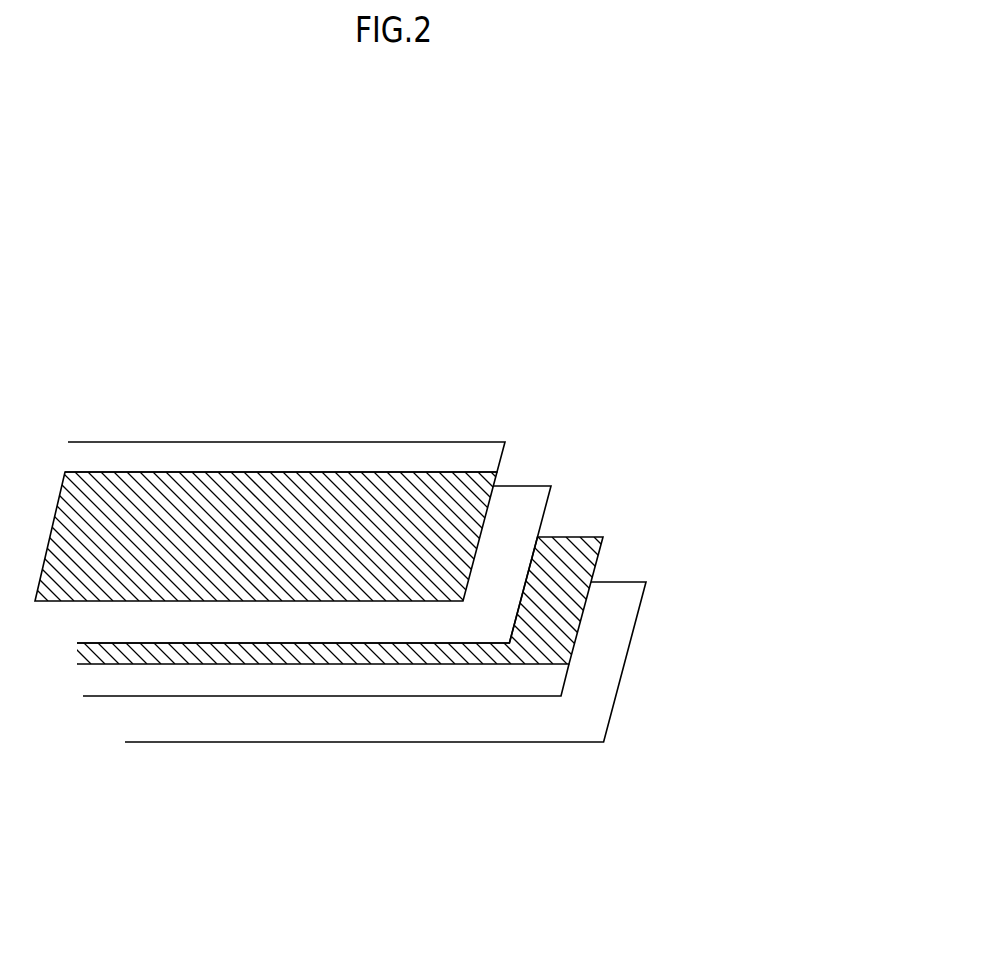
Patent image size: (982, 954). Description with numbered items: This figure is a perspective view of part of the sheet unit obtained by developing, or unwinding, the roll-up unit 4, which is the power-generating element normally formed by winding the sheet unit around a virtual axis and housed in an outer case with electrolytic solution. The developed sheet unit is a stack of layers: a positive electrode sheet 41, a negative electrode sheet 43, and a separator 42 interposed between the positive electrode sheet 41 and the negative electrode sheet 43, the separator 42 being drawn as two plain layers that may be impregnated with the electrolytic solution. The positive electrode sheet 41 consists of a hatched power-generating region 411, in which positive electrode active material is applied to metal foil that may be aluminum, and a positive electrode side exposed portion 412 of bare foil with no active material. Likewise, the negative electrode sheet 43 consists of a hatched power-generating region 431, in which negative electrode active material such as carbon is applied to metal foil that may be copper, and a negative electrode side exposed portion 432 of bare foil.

The roll-up unit 4 is at (555, 300).
The positive electrode sheet 41 is at (230, 342).
The power-generating region 411 is at (126, 525).
The positive electrode side exposed portion 412 is at (193, 456).
The separator 42 is at (523, 518).
The negative electrode sheet 43 is at (560, 817).
The power-generating region 431 is at (538, 630).
The negative electrode side exposed portion 432 is at (453, 680).